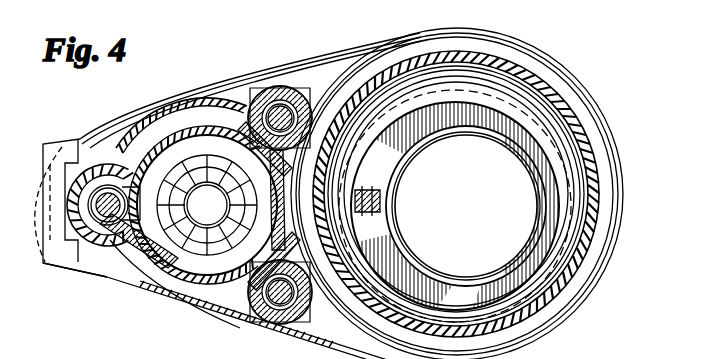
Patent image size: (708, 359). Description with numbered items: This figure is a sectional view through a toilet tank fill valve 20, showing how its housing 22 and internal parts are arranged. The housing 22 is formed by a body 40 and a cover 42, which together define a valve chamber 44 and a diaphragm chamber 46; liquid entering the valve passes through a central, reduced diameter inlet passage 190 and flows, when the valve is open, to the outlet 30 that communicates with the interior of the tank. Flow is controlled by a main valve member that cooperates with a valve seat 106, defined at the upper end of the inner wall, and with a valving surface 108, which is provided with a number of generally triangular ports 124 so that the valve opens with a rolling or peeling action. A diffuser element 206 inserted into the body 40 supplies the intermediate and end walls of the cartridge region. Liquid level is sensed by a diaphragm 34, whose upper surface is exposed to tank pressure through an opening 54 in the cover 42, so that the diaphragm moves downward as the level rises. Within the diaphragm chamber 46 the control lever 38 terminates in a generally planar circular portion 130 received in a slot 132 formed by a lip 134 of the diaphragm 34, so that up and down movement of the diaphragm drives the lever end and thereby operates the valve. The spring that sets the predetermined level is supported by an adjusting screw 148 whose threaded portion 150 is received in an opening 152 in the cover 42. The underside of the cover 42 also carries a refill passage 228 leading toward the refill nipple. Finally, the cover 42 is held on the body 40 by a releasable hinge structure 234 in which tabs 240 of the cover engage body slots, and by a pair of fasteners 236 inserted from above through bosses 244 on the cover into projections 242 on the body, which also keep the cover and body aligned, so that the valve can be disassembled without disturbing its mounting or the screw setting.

The fill valve 20 is at (578, 52).
The housing 22 is at (585, 97).
The outlet 30 is at (42, 153).
The diaphragm 34 is at (481, 207).
The control lever 38 is at (372, 196).
The body 40 is at (55, 270).
The cover 42 is at (565, 318).
The valve chamber 44 is at (178, 302).
The diaphragm chamber 46 is at (508, 78).
The opening 54 is at (310, 178).
The valve seat 106 is at (207, 205).
The valving surface 108 is at (210, 315).
The ports 124 is at (246, 120).
The circular portion 130 is at (395, 80).
The slot 132 is at (490, 130).
The lip 134 is at (481, 56).
The adjusting screw 148 is at (93, 265).
The threaded portion 150 is at (113, 166).
The opening 152 is at (90, 170).
The inlet passage 190 is at (207, 205).
The diffuser element 206 is at (263, 220).
The refill passage 228 is at (186, 104).
The releasable hinge structure 234 is at (57, 158).
The fasteners 236 is at (280, 106).
The tabs 240 is at (47, 258).
The projections 242 is at (266, 100).
The bosses 244 is at (296, 92).